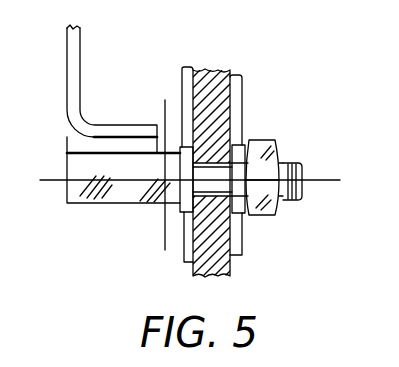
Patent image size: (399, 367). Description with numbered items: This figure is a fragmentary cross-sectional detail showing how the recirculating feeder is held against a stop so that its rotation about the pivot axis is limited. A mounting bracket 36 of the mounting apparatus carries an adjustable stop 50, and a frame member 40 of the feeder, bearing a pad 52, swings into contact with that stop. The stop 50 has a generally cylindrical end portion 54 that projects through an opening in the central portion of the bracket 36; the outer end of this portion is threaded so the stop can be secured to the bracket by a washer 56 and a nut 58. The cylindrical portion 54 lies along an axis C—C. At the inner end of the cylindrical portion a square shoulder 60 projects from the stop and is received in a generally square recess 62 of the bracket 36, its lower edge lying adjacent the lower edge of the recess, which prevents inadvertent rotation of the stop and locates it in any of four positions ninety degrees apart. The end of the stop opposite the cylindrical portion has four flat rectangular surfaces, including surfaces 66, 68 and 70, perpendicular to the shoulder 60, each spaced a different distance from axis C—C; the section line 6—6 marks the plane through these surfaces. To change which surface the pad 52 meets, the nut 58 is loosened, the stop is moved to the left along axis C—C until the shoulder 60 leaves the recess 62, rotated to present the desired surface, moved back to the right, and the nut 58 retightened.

The mounting bracket 36 is at (213, 67).
The frame member 40 is at (68, 56).
The stop 50 is at (73, 212).
The pad 52 is at (73, 147).
The cylindrical end portion 54 is at (228, 153).
The washer 56 is at (264, 142).
The nut 58 is at (282, 158).
The square shoulder 60 is at (186, 169).
The square recess 62 is at (183, 80).
The flat rectangular surface 66 is at (96, 150).
The flat rectangular surface 68 is at (117, 192).
The flat rectangular surface 70 is at (92, 203).
The section line 6— 6 is at (163, 105).
The axis C— C is at (332, 177).